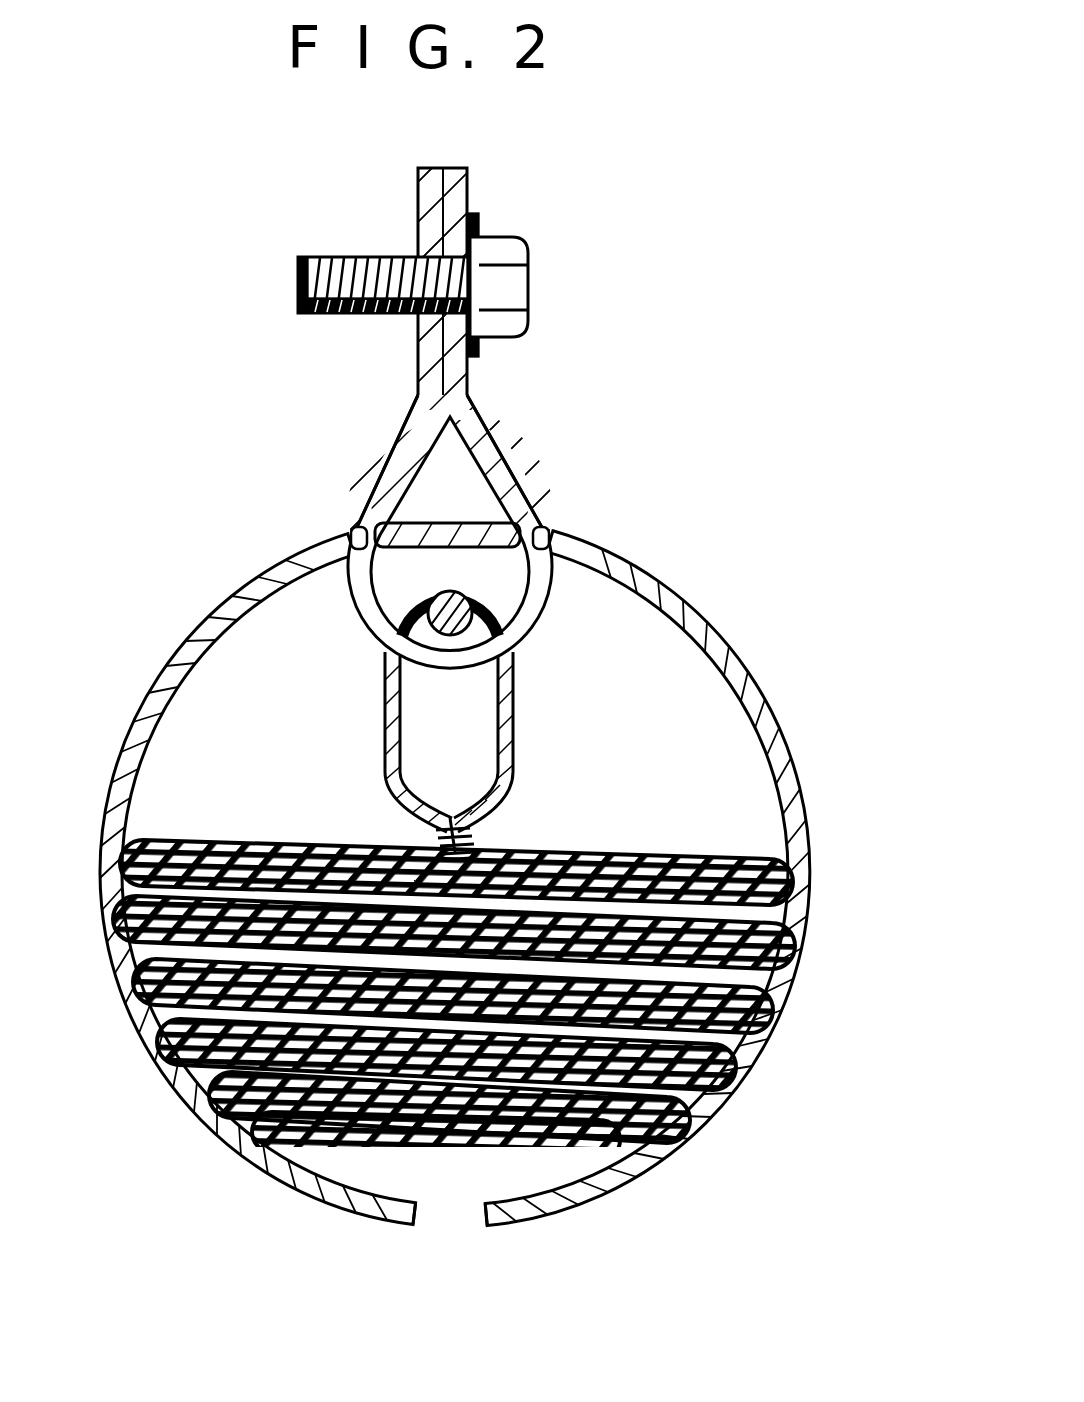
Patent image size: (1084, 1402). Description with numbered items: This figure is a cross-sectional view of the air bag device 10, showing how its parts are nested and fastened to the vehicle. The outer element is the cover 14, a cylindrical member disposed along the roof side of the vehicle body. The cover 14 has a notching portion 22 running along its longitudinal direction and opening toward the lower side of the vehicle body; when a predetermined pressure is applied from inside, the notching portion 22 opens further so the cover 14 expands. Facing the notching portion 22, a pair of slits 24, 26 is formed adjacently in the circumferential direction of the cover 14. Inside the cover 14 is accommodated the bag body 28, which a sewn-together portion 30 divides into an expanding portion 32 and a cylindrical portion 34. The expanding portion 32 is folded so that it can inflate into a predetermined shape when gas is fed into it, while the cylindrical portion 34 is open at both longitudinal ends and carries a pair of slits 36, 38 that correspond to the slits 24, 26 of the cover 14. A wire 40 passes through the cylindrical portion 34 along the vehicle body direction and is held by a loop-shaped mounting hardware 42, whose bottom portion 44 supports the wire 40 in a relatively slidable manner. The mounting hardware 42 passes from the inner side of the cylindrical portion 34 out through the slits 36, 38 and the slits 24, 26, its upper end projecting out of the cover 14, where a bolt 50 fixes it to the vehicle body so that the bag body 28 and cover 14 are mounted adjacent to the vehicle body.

The air bag device 10 is at (752, 262).
The cover 14 is at (810, 895).
The notching portion 22 is at (487, 1210).
The slit 24 is at (356, 538).
The slit 26 is at (545, 538).
The bag body 28 is at (598, 805).
The sewn-together portion 30 is at (440, 840).
The expanding portion 32 is at (665, 872).
The cylindrical portion 34 is at (515, 730).
The slit 36 is at (392, 646).
The slit 38 is at (523, 640).
The wire 40 is at (452, 525).
The mounting hardware 42 is at (470, 202).
The bottom portion 44 is at (380, 518).
The bolt 50 is at (532, 300).